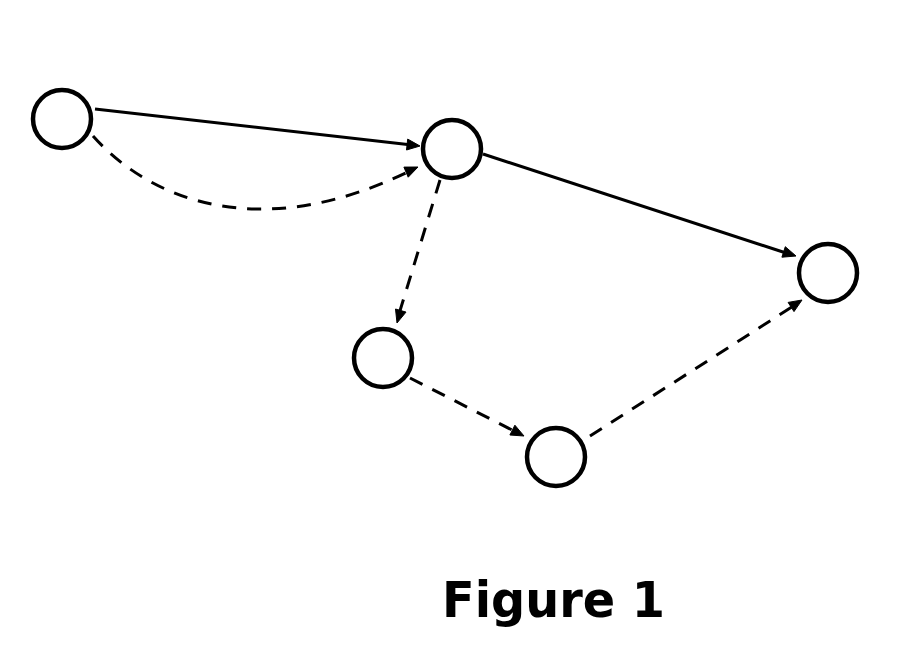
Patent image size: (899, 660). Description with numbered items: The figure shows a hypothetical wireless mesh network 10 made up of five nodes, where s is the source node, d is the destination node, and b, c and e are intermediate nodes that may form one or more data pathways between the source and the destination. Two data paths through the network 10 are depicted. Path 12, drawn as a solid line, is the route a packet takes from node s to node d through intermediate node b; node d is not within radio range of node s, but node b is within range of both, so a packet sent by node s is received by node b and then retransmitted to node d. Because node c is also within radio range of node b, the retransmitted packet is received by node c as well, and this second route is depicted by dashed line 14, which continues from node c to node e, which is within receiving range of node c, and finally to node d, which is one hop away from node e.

The network 10 is at (625, 62).
The path 12 is at (231, 122).
The dashed line 14 is at (203, 202).